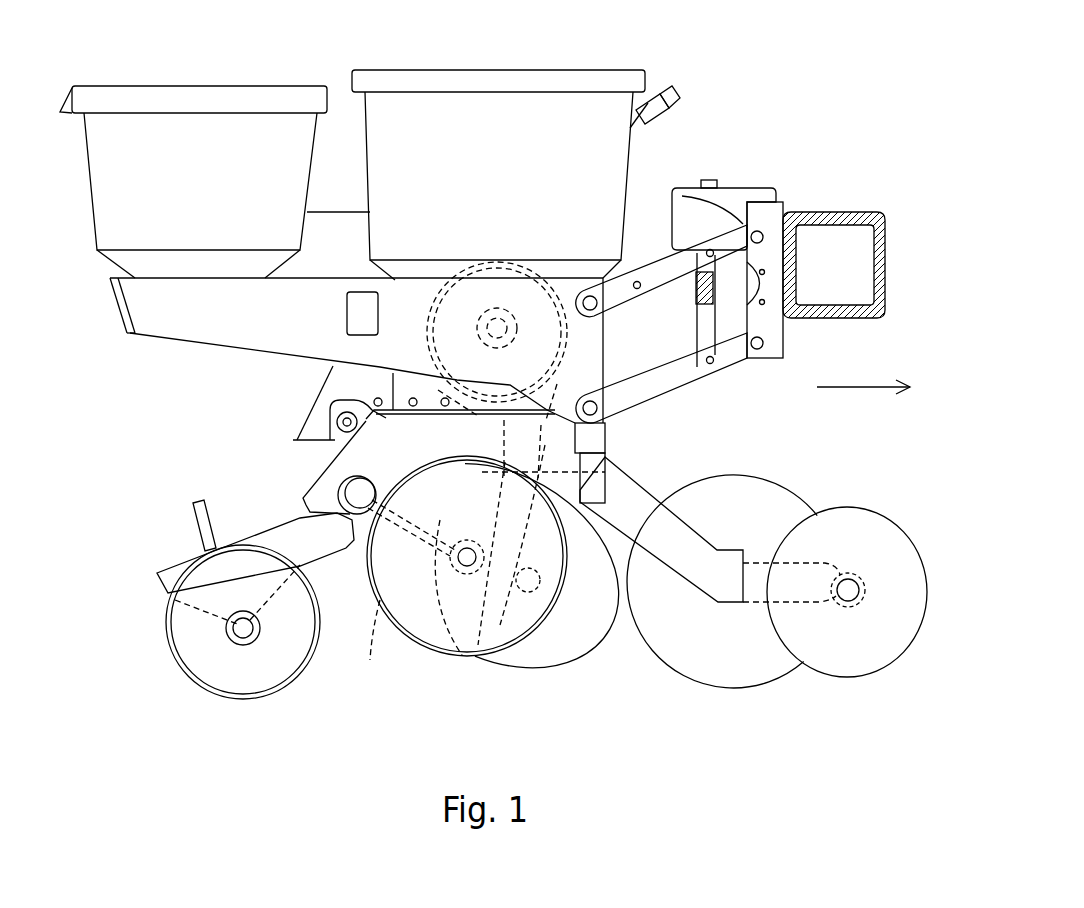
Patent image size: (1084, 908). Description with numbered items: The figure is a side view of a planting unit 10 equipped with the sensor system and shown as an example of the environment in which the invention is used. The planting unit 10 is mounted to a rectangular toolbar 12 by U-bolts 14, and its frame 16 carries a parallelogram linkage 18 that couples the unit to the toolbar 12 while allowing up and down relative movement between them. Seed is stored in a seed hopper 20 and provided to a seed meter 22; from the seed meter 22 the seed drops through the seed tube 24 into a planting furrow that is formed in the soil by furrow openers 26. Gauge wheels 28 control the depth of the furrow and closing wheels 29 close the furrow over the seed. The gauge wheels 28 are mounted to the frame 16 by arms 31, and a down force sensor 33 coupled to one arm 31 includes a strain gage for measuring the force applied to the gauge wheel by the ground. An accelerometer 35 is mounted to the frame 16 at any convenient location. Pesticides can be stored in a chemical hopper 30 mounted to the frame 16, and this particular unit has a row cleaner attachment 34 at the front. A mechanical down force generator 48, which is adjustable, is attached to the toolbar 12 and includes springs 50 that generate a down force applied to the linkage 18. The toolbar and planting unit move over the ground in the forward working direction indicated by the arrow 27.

The planting unit 10 is at (705, 118).
The toolbar 12 is at (875, 238).
The U-bolts 14 is at (831, 216).
The frame 16 is at (228, 323).
The parallelogram linkage 18 is at (630, 302).
The seed hopper 20 is at (507, 173).
The seed meter 22 is at (432, 290).
The seed tube 24 is at (590, 463).
The furrow openers 26 is at (578, 637).
The arrow 27 is at (848, 388).
The gauge wheels 28 is at (414, 620).
The closing wheels 29 is at (192, 668).
The chemical hopper 30 is at (202, 183).
The arms 31 is at (420, 492).
The down force sensor 33 is at (376, 598).
The row cleaner attachment 34 is at (731, 457).
The accelerometer 35 is at (375, 310).
The mechanical down force generator 48 is at (738, 160).
The springs 50 is at (692, 292).